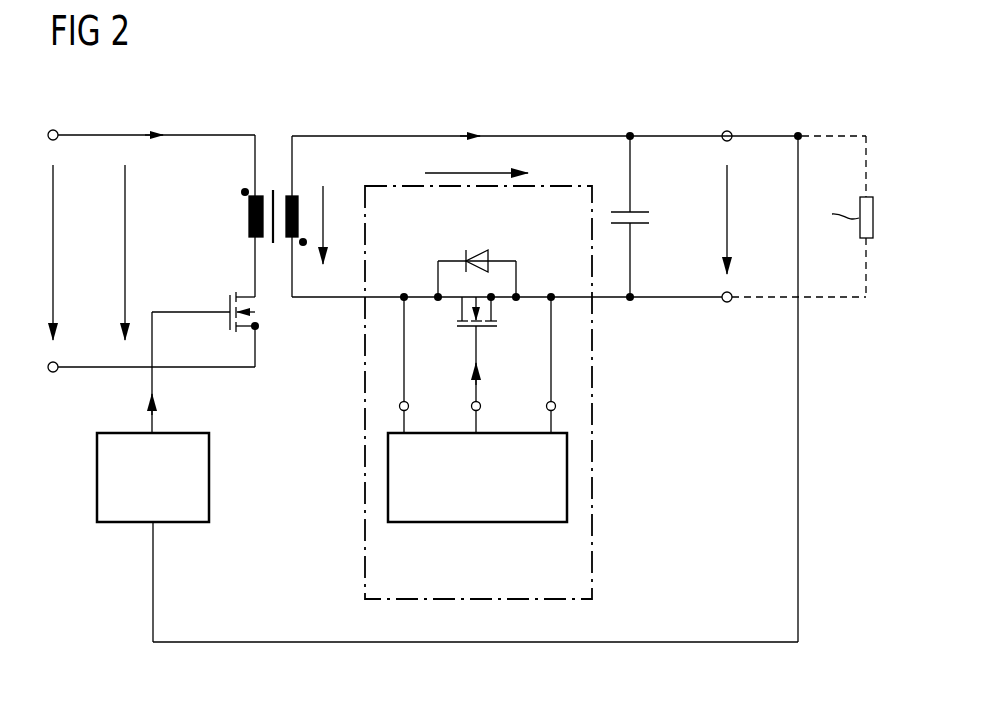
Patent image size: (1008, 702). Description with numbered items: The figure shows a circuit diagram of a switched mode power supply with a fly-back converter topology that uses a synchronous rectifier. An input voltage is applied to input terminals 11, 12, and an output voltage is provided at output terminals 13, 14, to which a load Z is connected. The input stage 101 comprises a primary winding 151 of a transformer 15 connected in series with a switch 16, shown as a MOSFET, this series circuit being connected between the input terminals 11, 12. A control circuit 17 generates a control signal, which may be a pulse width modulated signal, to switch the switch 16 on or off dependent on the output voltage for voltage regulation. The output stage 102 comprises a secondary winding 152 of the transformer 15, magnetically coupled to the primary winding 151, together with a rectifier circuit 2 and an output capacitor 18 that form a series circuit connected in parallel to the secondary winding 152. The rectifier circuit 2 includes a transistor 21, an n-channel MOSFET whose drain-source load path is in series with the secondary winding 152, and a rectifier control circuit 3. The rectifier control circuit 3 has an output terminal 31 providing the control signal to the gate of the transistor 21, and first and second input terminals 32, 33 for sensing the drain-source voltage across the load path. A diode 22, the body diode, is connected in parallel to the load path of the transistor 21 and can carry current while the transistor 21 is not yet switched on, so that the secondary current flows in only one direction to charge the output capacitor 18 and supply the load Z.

The rectifier circuit 2 is at (593, 440).
The rectifier control circuit 3 is at (477, 523).
The input terminal 11 is at (55, 129).
The input terminal 12 is at (55, 373).
The output terminal 13 is at (729, 130).
The output terminal 14 is at (729, 303).
The transformer 15 is at (264, 151).
The switch 16 is at (229, 297).
The control circuit 17 is at (210, 478).
The output capacitor 18 is at (652, 218).
The transistor 21 is at (466, 328).
The diode 22 is at (470, 252).
The output terminal 31 is at (472, 402).
The first input terminal 32 is at (409, 407).
The second input terminal 33 is at (547, 407).
The input stage 101 is at (200, 118).
The output stage 102 is at (508, 118).
The primary winding 151 is at (249, 217).
The secondary winding 152 is at (293, 196).